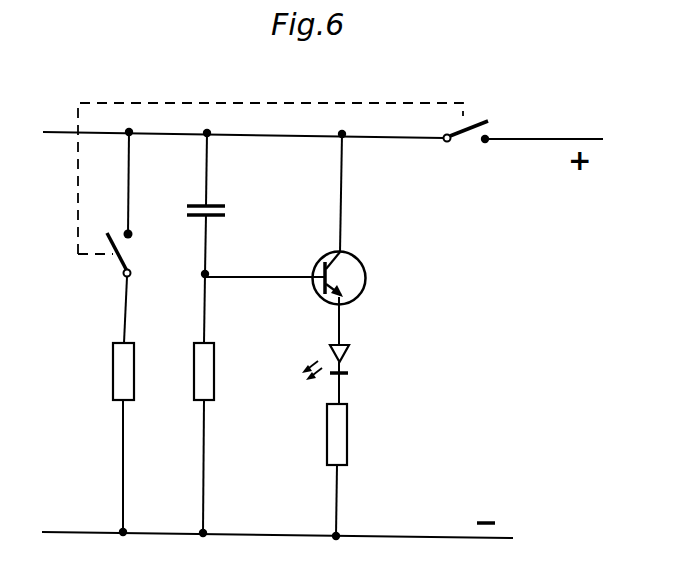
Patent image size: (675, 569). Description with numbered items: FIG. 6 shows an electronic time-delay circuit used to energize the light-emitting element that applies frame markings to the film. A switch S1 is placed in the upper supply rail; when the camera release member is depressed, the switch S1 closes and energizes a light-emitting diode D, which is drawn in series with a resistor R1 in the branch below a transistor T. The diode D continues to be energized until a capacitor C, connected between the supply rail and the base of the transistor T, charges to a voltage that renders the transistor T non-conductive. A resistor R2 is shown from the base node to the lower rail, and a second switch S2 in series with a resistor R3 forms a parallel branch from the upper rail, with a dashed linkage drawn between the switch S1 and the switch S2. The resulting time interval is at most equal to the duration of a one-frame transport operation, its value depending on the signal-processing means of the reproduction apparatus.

The switch S1 is at (466, 150).
The second switch S2 is at (137, 204).
The capacitor C is at (218, 203).
The transistor T is at (295, 239).
The light-emitting diode D is at (336, 374).
The resistor R1 is at (354, 470).
The resistor R2 is at (220, 403).
The resistor R3 is at (140, 404).